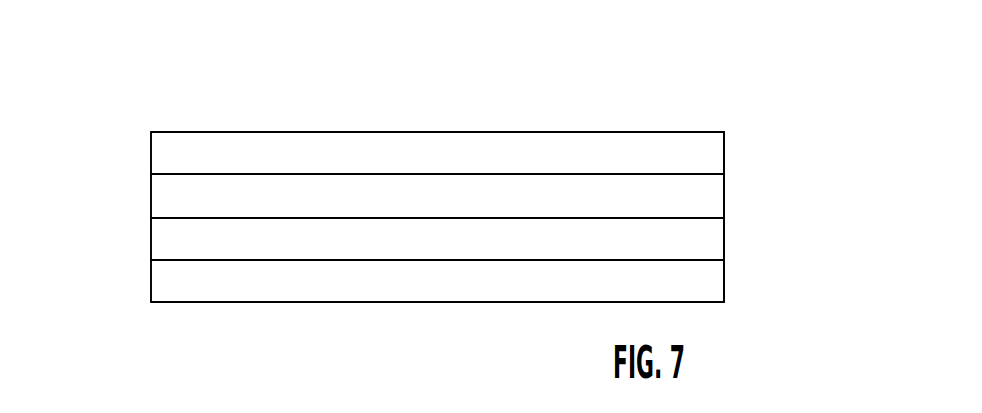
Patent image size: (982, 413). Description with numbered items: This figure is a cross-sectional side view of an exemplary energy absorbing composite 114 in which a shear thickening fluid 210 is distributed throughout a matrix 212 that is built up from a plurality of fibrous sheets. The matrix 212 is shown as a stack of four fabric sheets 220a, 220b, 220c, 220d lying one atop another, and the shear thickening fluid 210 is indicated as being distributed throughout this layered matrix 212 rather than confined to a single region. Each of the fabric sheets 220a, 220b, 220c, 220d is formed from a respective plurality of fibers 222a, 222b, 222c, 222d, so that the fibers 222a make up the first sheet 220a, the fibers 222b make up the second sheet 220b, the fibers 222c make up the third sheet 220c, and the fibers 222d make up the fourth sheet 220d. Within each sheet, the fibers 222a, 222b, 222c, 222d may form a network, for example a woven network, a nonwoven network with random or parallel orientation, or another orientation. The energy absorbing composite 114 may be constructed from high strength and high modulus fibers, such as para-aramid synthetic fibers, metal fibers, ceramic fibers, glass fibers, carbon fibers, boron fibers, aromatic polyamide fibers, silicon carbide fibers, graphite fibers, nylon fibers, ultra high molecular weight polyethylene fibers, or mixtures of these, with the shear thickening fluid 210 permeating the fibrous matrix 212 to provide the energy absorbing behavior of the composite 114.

The energy absorbing composite 114 is at (118, 82).
The matrix 212 is at (306, 122).
The shear thickening fluid 210 is at (277, 160).
The fabric sheet 220a is at (726, 152).
The fabric sheet 220b is at (727, 193).
The fabric sheet 220c is at (728, 235).
The fabric sheet 220d is at (730, 280).
The fibers 222a is at (539, 153).
The fibers 222b is at (497, 192).
The fibers 222c is at (459, 235).
The fibers 222d is at (442, 270).